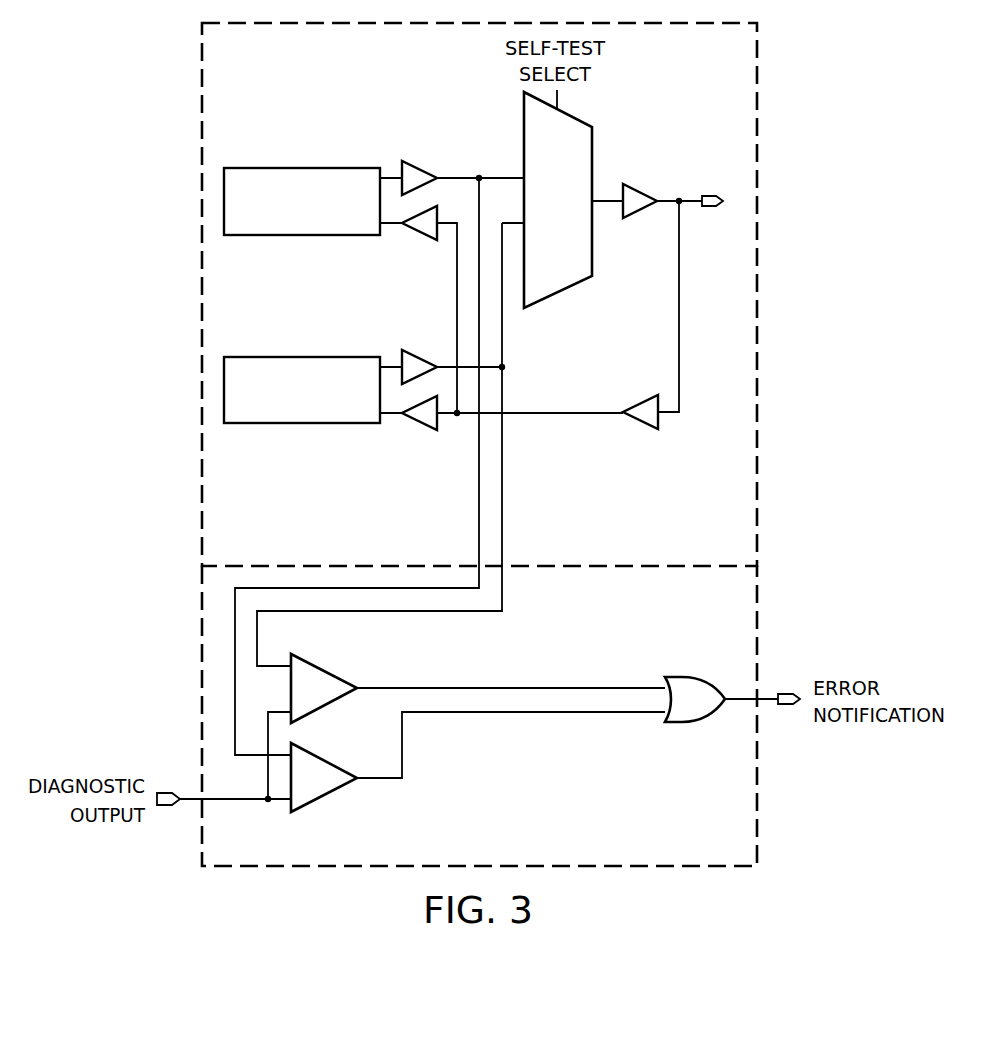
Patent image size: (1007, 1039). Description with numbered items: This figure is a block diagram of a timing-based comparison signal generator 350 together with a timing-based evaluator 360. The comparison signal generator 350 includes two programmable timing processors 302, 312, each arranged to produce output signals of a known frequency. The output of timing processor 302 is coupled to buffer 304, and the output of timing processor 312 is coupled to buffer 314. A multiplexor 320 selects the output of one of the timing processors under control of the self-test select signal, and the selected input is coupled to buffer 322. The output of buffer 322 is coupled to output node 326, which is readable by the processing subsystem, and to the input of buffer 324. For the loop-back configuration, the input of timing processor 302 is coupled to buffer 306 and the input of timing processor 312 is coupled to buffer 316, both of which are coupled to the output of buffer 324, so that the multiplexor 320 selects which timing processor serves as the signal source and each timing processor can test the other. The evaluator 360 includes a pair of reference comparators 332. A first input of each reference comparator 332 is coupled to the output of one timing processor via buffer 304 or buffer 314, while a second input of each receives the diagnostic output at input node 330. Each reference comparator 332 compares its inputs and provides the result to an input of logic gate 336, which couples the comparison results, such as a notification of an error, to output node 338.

The timing processor 302 is at (302, 168).
The buffer 304 is at (417, 162).
The buffer 306 is at (412, 241).
The timing processor 312 is at (302, 357).
The buffer 314 is at (417, 350).
The buffer 316 is at (412, 430).
The multiplexor 320 is at (558, 292).
The buffer 322 is at (642, 214).
The buffer 324 is at (638, 396).
The output node 326 is at (708, 207).
The input node 330 is at (163, 806).
The reference comparator 332 is at (322, 670).
The logic gate 336 is at (692, 723).
The output node 338 is at (790, 705).
The comparison signal generator 350 is at (646, 545).
The evaluator 360 is at (645, 660).